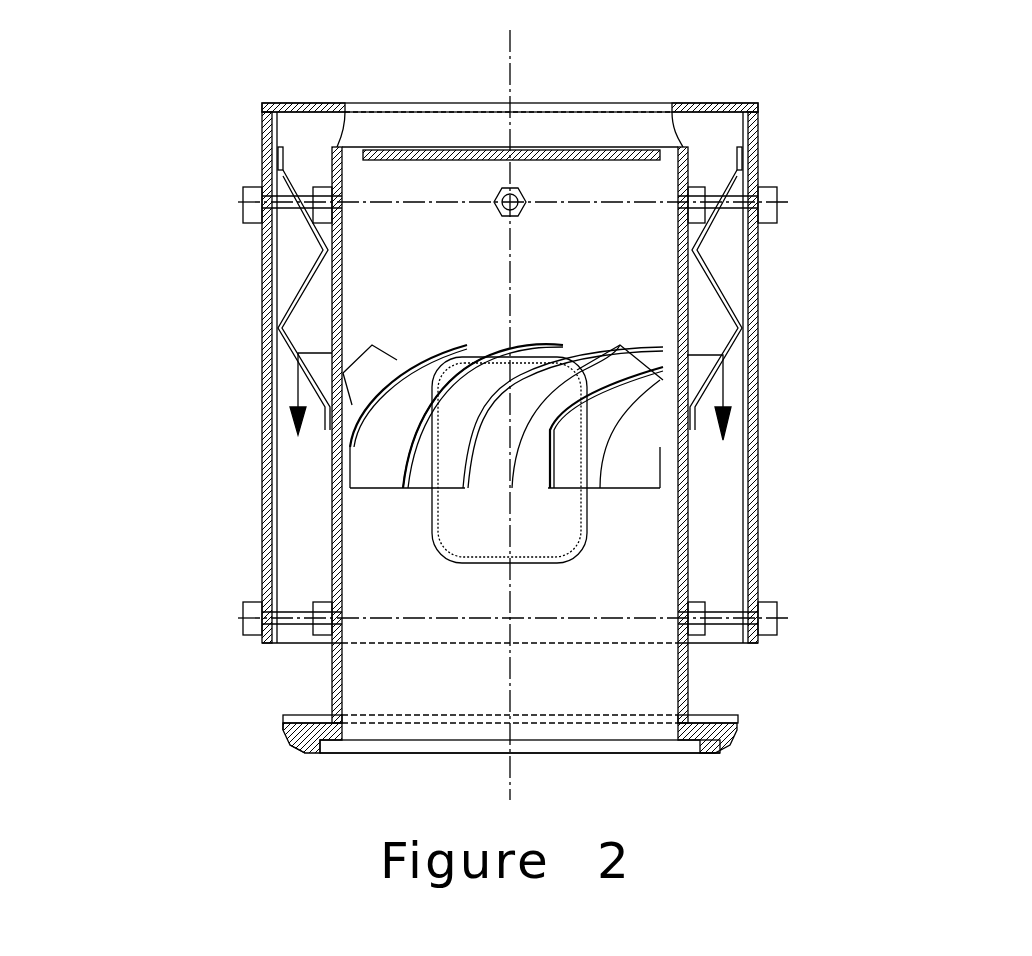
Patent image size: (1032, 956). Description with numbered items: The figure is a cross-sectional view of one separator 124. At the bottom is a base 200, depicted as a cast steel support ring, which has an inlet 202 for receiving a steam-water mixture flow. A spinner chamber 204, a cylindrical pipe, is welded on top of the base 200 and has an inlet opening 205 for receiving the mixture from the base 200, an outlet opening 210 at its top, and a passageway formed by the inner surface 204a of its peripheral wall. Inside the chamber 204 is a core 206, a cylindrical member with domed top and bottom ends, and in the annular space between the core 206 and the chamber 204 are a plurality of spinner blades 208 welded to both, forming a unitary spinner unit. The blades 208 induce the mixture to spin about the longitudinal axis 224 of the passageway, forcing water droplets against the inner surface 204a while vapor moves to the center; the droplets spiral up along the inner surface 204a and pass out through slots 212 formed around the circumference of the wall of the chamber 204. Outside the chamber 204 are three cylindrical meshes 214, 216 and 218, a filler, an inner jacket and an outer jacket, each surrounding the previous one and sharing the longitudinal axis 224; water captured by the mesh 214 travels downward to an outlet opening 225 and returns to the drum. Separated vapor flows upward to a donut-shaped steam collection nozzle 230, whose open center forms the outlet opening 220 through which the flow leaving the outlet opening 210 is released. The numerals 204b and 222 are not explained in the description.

The separator 124 is at (905, 80).
The base 200 is at (305, 742).
The inlet 202 is at (515, 760).
The spinner chamber 204 is at (688, 705).
The inner surface of the peripheral wall 204a is at (678, 558).
The outer wall 204b is at (688, 527).
The inlet opening 205 is at (512, 722).
The core 206 is at (492, 543).
The spinner blades 208 is at (380, 470).
The outlet opening 210 is at (465, 150).
The slots 212 is at (352, 358).
The mesh 214 is at (293, 283).
The mesh 216 is at (282, 542).
The mesh 218 is at (248, 328).
The outlet opening 220 is at (514, 339).
The lower bolt 222 is at (785, 600).
The longitudinal axis 224 is at (508, 92).
The outlet opening 225 is at (300, 645).
The steam collection nozzle 230 is at (608, 122).